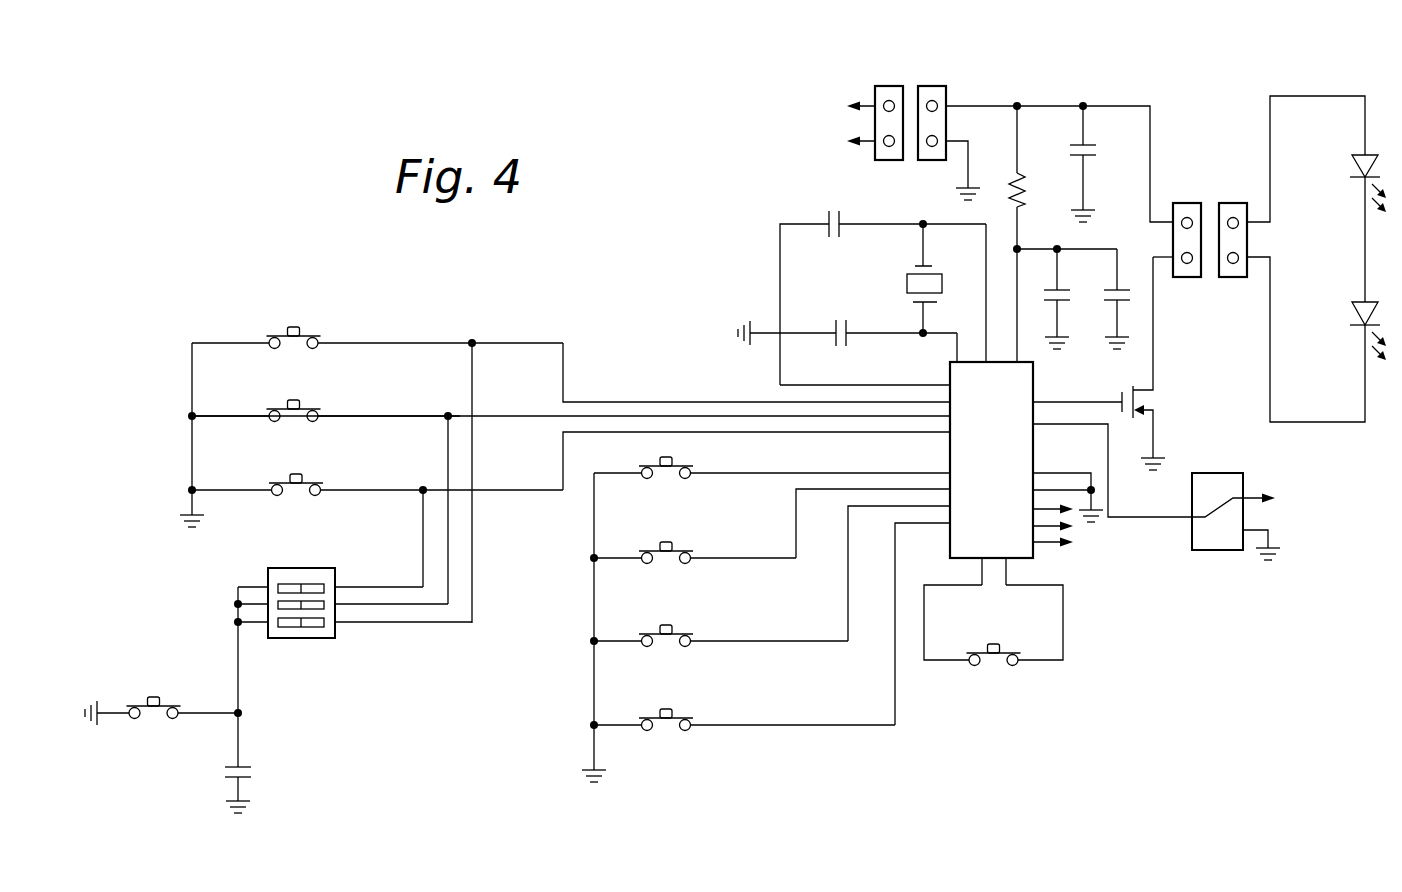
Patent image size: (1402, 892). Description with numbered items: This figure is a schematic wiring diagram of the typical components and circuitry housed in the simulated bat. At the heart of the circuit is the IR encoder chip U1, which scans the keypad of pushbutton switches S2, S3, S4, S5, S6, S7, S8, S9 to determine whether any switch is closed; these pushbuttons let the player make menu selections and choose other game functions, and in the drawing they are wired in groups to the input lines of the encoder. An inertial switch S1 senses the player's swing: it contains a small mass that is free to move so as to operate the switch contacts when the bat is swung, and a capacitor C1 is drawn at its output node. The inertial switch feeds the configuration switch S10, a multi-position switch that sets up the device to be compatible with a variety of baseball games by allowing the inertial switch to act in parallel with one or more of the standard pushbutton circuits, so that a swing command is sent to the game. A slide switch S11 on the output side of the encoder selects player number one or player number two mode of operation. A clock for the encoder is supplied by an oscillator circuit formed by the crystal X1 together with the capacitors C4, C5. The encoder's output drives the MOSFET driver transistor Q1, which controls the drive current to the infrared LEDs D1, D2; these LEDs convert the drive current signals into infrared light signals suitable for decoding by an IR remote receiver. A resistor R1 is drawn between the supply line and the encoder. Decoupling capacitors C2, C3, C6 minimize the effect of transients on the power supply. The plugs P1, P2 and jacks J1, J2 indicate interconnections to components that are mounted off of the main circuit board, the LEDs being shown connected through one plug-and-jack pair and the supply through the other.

The inertial switch S1 is at (148, 697).
The pushbutton switch S2 is at (670, 458).
The pushbutton switch S3 is at (670, 713).
The pushbutton switch S4 is at (670, 543).
The pushbutton switch S5 is at (670, 628).
The pushbutton switch S6 is at (290, 327).
The pushbutton switch S7 is at (292, 400).
The pushbutton switch S8 is at (293, 474).
The pushbutton switch S9 is at (990, 645).
The configuration switch S10 is at (297, 568).
The slide switch S11 is at (1192, 540).
The capacitor C1 is at (228, 768).
The decoupling capacitor C2 is at (1090, 143).
The decoupling capacitor C3 is at (1063, 300).
The capacitor C4 is at (827, 218).
The capacitor C5 is at (848, 337).
The decoupling capacitor C6 is at (1122, 302).
The resistor R1 is at (1022, 192).
The crystal X1 is at (907, 283).
The IR encoder chip U1 is at (1023, 550).
The MOSFET driver transistor Q1 is at (1143, 402).
The plug P1 is at (887, 86).
The jack J1 is at (932, 86).
The plug P2 is at (1233, 203).
The jack J2 is at (1187, 203).
The infrared LED D1 is at (1352, 158).
The infrared LED D2 is at (1362, 302).